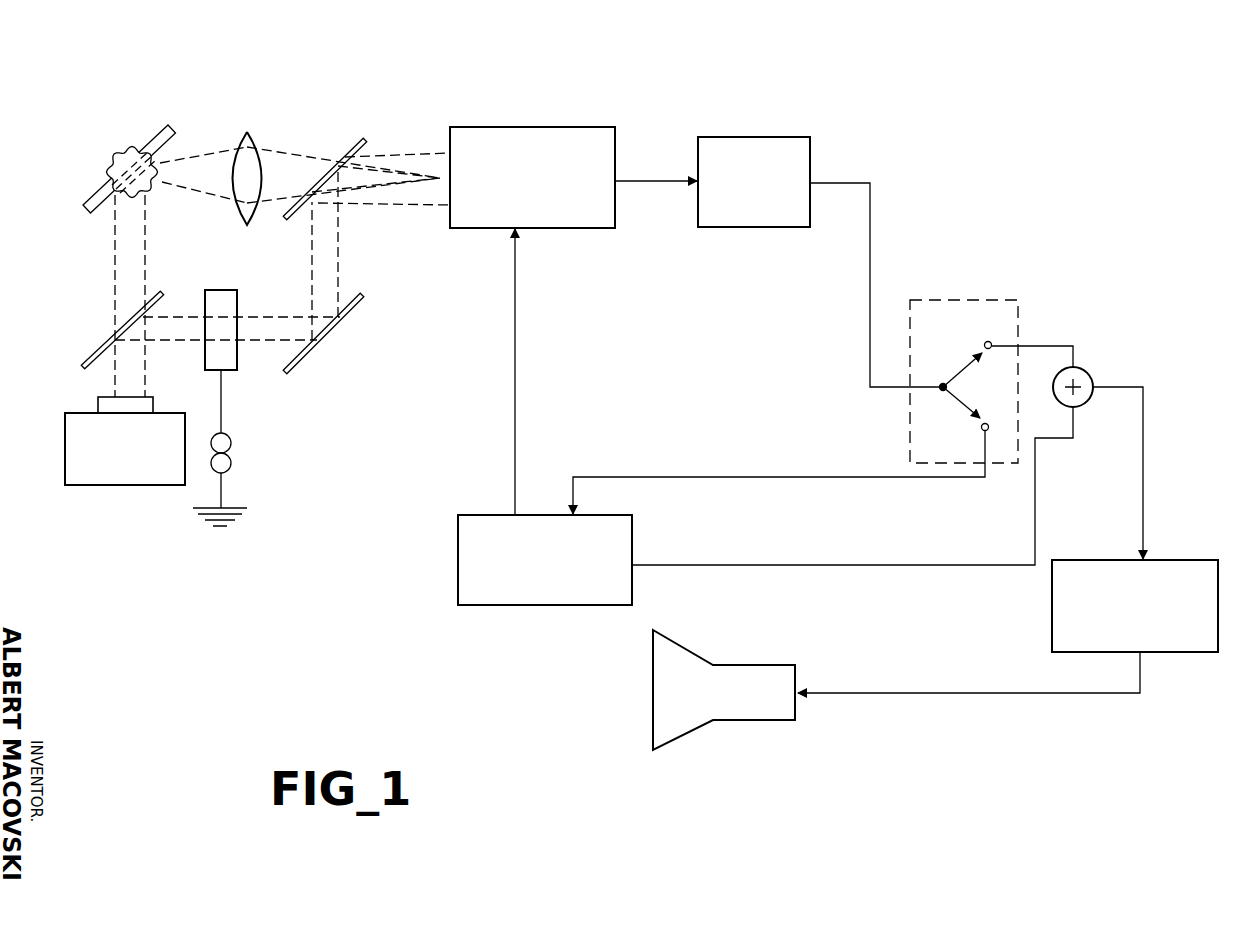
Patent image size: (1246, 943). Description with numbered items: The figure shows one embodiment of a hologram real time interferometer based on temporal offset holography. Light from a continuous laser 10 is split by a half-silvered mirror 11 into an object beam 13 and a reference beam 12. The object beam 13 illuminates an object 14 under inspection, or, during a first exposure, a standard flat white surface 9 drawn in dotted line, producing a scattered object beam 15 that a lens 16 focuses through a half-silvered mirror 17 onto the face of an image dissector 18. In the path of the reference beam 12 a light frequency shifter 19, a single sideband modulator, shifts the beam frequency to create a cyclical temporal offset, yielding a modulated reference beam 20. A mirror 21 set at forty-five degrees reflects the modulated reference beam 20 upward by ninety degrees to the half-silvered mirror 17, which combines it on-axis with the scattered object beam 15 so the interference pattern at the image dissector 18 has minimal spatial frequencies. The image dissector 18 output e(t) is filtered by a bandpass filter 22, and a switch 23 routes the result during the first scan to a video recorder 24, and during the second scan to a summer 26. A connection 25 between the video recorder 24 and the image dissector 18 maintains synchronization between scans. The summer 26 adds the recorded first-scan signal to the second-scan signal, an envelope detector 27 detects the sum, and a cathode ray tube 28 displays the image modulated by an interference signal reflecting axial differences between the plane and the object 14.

The flat white surface 9 is at (163, 128).
The continuous laser 10 is at (65, 440).
The half-silvered mirror 11 is at (90, 353).
The reference beam 12 is at (158, 350).
The object beam 13 is at (115, 273).
The object 14 is at (113, 153).
The scattered object beam 15 is at (200, 157).
The lens 16 is at (250, 135).
The half-silvered mirror 17 is at (356, 146).
The image dissector 18 is at (500, 127).
The light frequency shifter 19 is at (222, 290).
The modulated reference beam 20 is at (272, 317).
The mirror 21 is at (358, 308).
The bandpass filter 22 is at (748, 135).
The switch 23 is at (965, 297).
The video recorder 24 is at (458, 578).
The connection 25 is at (517, 348).
The summer 26 is at (1090, 370).
The envelope detector 27 is at (1170, 560).
The cathode ray tube 28 is at (653, 697).